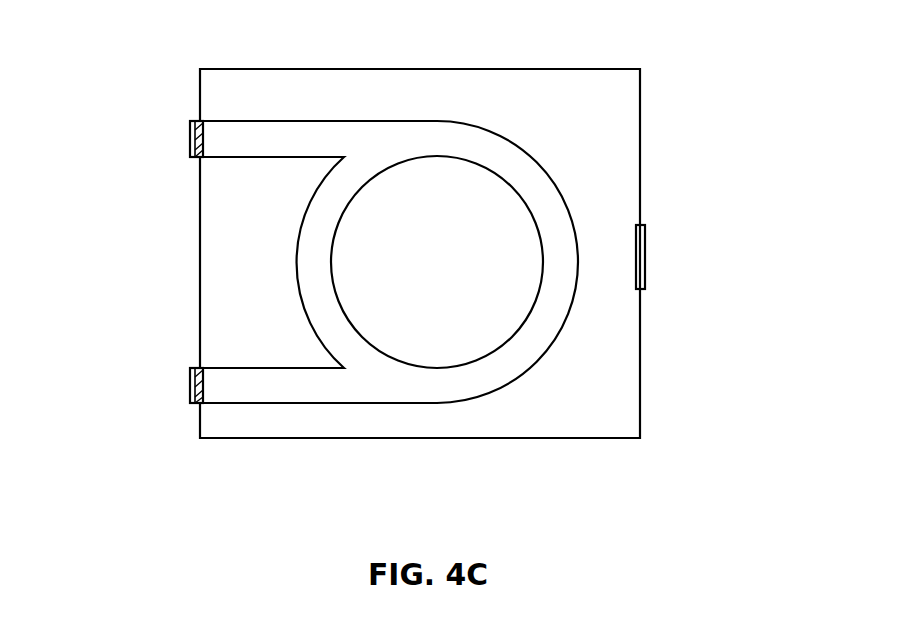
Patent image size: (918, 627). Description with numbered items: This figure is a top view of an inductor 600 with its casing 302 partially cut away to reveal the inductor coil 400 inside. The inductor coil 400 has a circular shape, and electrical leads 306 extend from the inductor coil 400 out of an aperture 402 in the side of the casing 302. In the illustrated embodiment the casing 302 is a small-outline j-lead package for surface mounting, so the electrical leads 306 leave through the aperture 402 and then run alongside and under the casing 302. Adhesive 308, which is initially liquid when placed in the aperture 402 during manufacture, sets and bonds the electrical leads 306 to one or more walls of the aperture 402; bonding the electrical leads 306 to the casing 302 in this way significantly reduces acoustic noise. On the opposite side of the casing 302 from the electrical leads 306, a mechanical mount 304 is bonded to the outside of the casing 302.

The casing 302 is at (658, 377).
The mechanical mount 304 is at (667, 259).
The electrical leads 306 is at (175, 386).
The adhesive 308 is at (198, 158).
The inductor coil 400 is at (588, 165).
The aperture 402 is at (262, 453).
The inductor 600 is at (702, 483).